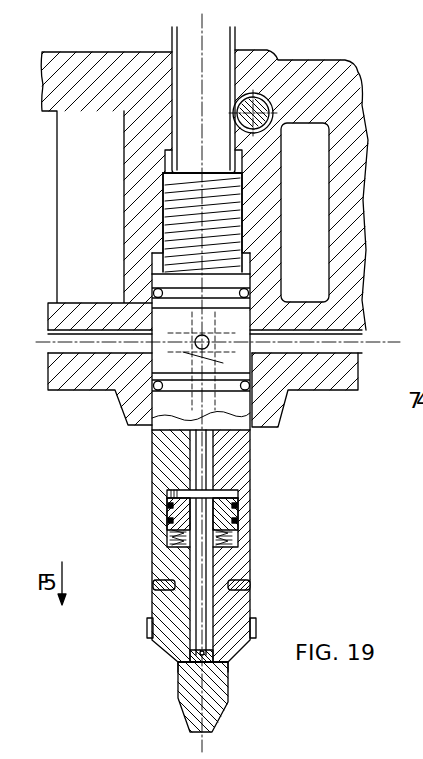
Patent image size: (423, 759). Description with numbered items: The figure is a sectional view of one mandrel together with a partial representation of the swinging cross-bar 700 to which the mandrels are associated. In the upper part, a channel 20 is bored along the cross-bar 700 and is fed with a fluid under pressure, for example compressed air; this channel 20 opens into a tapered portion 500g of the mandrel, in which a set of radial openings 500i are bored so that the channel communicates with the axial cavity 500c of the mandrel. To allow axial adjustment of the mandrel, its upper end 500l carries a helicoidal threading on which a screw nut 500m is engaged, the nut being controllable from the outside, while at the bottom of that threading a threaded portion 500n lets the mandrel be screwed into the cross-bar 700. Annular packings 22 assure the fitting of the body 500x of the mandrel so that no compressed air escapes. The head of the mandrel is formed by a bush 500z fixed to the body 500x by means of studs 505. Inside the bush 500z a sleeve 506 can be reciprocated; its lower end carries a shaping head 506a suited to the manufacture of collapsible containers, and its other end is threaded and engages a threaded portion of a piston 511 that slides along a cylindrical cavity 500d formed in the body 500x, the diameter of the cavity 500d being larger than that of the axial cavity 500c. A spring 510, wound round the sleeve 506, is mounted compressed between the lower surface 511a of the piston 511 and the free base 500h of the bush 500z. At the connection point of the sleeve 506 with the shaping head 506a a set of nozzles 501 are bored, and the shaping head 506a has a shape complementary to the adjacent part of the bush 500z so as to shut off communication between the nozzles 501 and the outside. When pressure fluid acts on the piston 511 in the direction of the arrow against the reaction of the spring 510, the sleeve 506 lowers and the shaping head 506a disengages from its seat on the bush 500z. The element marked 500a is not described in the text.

The swinging cross-bar 700 is at (346, 107).
The channel 20 is at (340, 343).
The annular packings 22 is at (244, 295).
The upper end of the mandrel 500l is at (204, 95).
The screw nut 500m is at (276, 106).
The threaded portion 500n is at (228, 218).
The tapered portion 500g is at (245, 353).
The radial openings 500i is at (228, 350).
The body of the mandrel 500x is at (242, 473).
The free base of the bush 500h is at (240, 558).
The axial cavity 500c is at (193, 466).
The cylindrical cavity 500d is at (170, 538).
The piston 511 is at (237, 510).
The lower surface of the piston 511a is at (237, 546).
The studs 505 is at (153, 584).
The sleeve 506 is at (160, 593).
The spring 510 is at (248, 592).
The bush 500z is at (255, 634).
The valve seat 500a is at (172, 645).
The nozzles 501 is at (216, 668).
The shaping head 506a is at (211, 699).